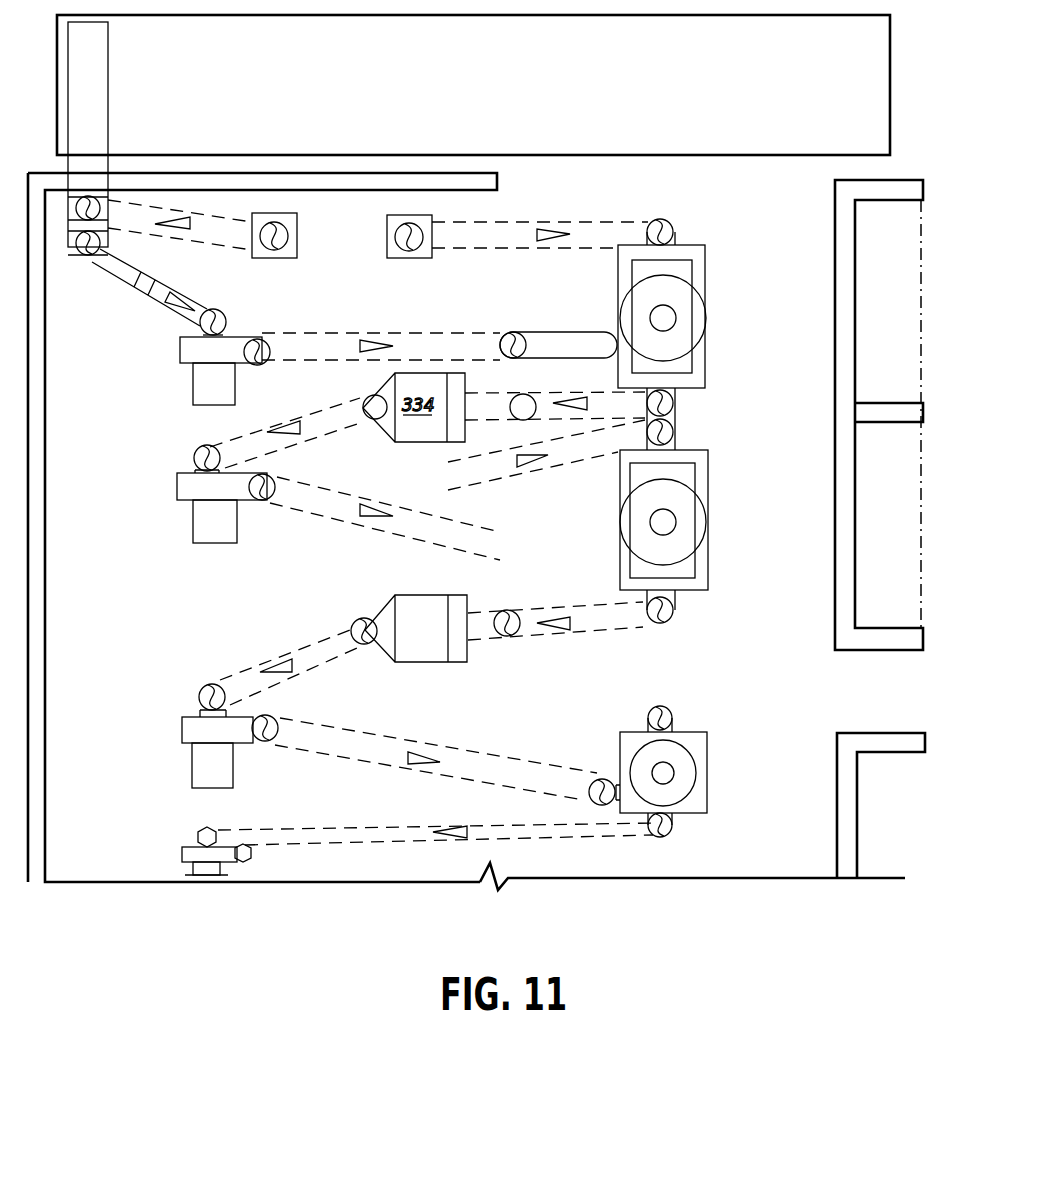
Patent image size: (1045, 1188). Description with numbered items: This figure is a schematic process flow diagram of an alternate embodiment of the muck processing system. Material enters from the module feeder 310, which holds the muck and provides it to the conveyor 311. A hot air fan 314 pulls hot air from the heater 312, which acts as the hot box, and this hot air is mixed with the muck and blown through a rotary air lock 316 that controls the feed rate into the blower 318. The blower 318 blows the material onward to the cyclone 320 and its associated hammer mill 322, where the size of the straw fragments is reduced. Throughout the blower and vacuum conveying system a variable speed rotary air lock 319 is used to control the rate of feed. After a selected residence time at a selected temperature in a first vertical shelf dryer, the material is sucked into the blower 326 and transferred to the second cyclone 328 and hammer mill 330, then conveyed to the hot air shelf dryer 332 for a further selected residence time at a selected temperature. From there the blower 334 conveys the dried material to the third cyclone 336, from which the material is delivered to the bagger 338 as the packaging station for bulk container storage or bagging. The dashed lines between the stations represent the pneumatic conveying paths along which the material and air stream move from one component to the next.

The module feeder 310 is at (460, 98).
The conveyor 311 is at (99, 84).
The heater 312 is at (300, 232).
The hot air fan 314 is at (76, 209).
The rotary air lock 316 is at (148, 295).
The blower 318 is at (216, 362).
The variable speed rotary air lock 319 is at (513, 332).
The cyclone 320 is at (704, 304).
The hammer mill 322 is at (698, 358).
The blower 326 is at (177, 487).
The cyclone 328 is at (706, 515).
The hammer mill 330 is at (693, 565).
The hot air shelf dryer 332 is at (434, 638).
The blower 334 is at (182, 735).
The cyclone 336 is at (690, 773).
The bagger 338 is at (182, 847).